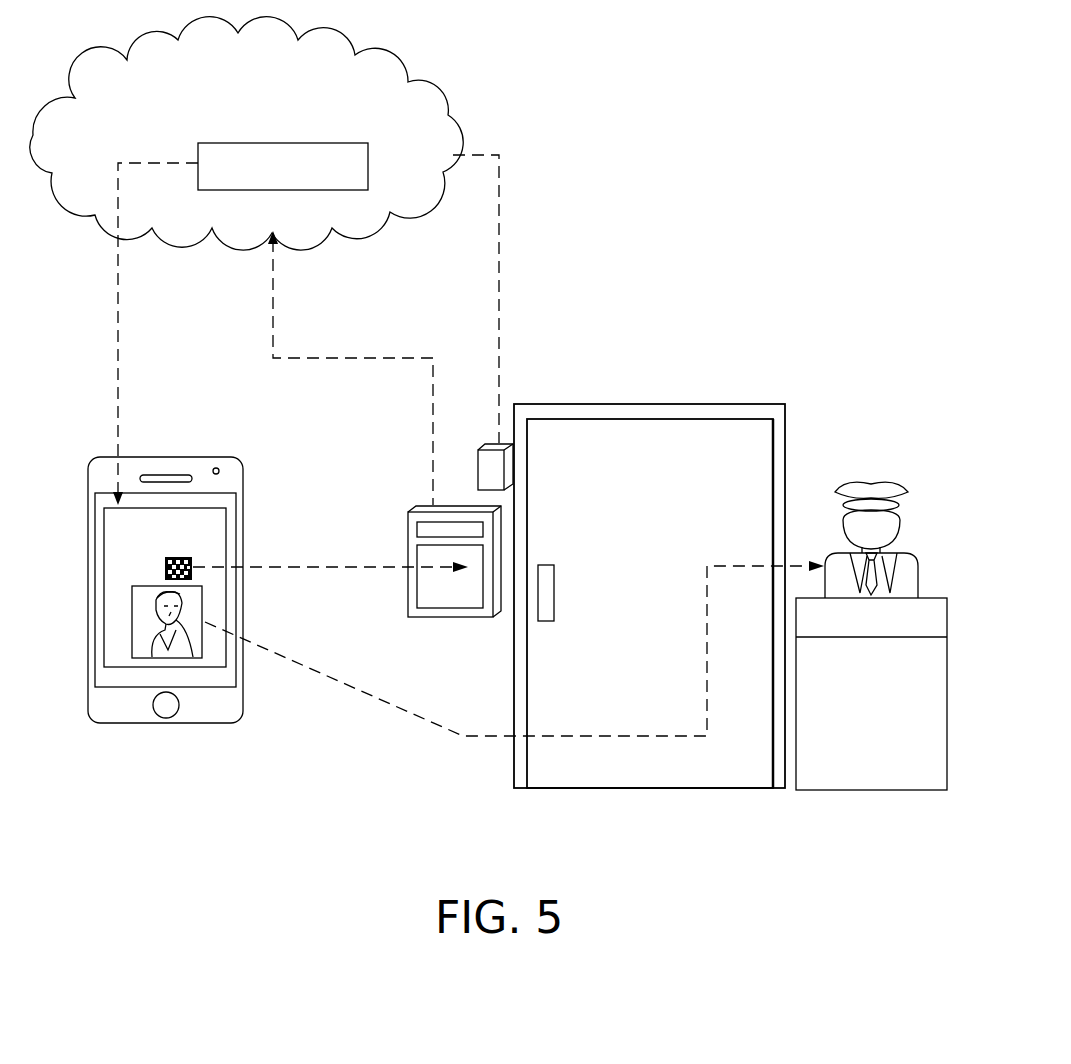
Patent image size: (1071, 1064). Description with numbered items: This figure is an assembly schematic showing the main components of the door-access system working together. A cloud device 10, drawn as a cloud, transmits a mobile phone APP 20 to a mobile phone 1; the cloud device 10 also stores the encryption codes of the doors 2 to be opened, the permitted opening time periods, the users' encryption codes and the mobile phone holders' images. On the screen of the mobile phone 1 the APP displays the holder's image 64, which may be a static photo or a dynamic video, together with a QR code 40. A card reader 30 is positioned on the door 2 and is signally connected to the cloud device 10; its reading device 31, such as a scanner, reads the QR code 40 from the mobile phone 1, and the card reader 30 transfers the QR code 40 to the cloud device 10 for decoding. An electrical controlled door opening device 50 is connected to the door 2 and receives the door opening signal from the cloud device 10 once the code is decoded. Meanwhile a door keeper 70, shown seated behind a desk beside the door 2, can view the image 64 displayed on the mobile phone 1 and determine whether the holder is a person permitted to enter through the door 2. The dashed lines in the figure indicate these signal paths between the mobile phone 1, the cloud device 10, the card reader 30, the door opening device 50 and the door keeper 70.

The cloud device 10 is at (93, 67).
The mobile phone APP 20 is at (288, 166).
The mobile phone 1 is at (88, 486).
The QR code 40 is at (164, 566).
The mobile phone holder's image 64 is at (131, 622).
The card reader 30 is at (408, 522).
The reading device 31 is at (450, 608).
The electrical controlled door opening device 50 is at (488, 446).
The door 2 is at (650, 419).
The door keeper 70 is at (878, 485).